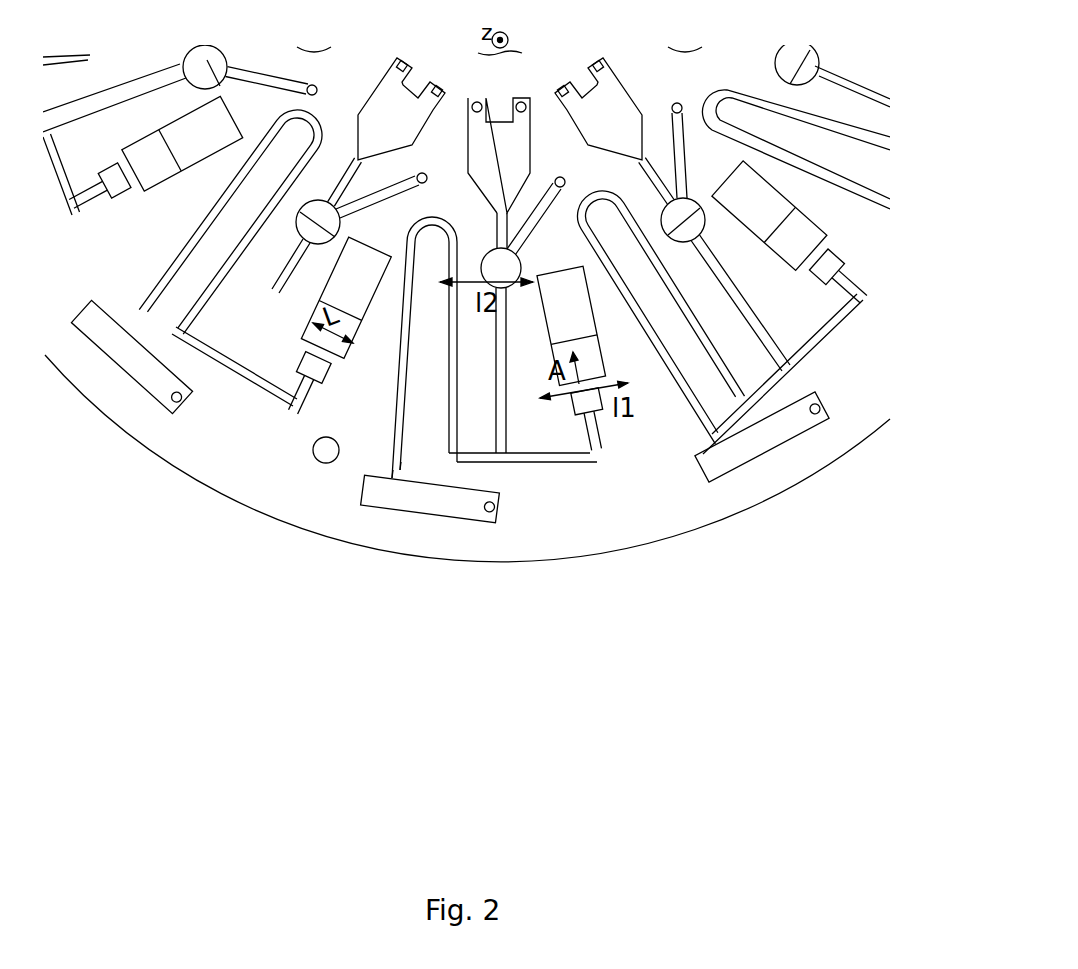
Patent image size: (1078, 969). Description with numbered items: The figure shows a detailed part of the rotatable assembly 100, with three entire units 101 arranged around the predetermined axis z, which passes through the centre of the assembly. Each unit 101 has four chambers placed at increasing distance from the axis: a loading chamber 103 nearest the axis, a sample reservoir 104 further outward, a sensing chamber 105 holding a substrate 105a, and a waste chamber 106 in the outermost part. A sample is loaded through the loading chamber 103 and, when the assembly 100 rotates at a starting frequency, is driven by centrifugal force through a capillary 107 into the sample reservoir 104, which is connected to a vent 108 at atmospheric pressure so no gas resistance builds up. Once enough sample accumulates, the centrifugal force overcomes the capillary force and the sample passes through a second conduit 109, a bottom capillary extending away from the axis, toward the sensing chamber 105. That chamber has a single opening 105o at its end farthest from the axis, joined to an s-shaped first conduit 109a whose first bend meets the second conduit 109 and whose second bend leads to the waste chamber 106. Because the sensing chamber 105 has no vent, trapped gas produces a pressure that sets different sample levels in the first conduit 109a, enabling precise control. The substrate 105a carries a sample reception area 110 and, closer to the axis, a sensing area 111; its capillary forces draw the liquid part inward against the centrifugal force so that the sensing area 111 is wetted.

The assembly 100 is at (125, 413).
The unit 101 is at (805, 236).
The loading chamber 103 is at (497, 112).
The sample reservoir 104 is at (508, 270).
The sensing chamber 105 is at (567, 293).
The substrate 105a is at (140, 160).
The opening 105o is at (588, 412).
The waste chamber 106 is at (440, 498).
The capillary 107 is at (503, 222).
The vent 108 is at (564, 180).
The second conduit 109 is at (503, 413).
The first conduit 109a is at (390, 425).
The sample reception area 110 is at (340, 356).
The sensing area 111 is at (332, 305).